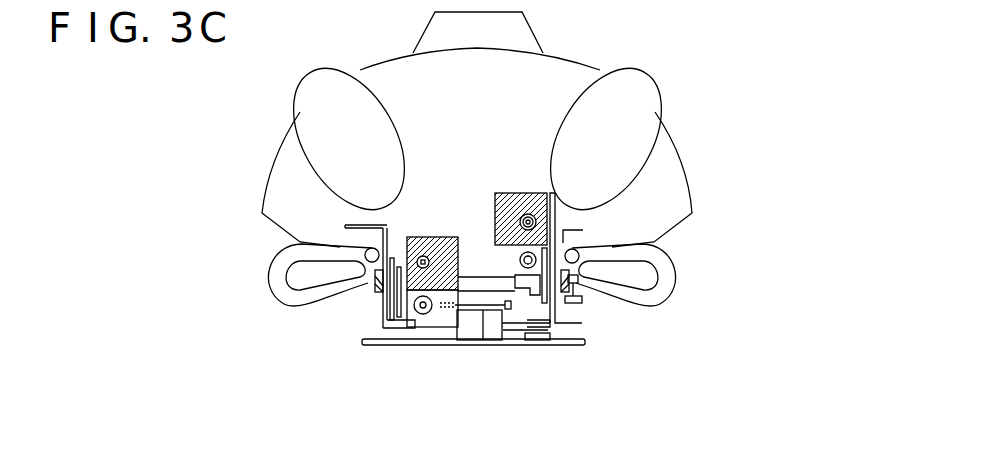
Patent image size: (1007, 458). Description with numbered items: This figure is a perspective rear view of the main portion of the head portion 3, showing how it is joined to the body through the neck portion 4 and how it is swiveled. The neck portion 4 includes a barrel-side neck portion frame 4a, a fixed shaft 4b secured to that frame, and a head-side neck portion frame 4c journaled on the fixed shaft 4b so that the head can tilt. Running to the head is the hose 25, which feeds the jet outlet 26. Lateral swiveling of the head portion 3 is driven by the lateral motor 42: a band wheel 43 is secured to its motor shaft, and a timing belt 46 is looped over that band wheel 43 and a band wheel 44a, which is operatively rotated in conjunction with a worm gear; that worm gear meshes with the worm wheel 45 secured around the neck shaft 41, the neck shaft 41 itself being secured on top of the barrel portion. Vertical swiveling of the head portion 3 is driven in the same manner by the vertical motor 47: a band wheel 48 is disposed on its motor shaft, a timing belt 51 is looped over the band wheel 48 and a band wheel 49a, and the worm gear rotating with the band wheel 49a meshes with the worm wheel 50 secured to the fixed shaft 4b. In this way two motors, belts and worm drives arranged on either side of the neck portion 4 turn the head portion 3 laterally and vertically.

The head portion 3 is at (712, 119).
The neck portion 4 is at (647, 326).
The barrel-side neck portion frame 4a is at (572, 345).
The fixed shaft 4b is at (468, 288).
The head-side neck portion frame 4c is at (376, 268).
The hose 25 is at (282, 287).
The jet outlet 26 is at (365, 257).
The neck shaft 41 is at (480, 333).
The lateral motor 42 is at (384, 302).
The band wheel 43 is at (383, 247).
The band wheel 44a is at (423, 308).
The worm wheel 45 is at (437, 300).
The timing belt 46 is at (382, 328).
The vertical motor 47 is at (553, 228).
The band wheel 48 is at (552, 193).
The band wheel 49a is at (578, 272).
The worm wheel 50 is at (567, 315).
The timing belt 51 is at (550, 255).